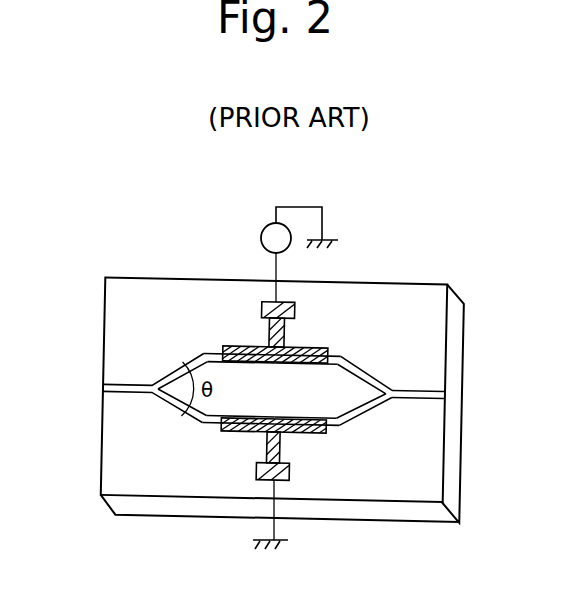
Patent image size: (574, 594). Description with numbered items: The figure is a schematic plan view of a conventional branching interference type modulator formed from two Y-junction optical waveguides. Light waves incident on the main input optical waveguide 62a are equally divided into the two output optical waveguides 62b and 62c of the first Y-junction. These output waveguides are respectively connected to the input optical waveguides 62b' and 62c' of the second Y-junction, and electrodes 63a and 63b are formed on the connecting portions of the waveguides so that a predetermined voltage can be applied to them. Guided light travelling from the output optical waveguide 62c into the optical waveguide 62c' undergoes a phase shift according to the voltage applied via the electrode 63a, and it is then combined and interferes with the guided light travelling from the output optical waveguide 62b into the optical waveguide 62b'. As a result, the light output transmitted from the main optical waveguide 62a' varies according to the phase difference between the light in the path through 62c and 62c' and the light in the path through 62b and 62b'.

The main input optical waveguide 62a is at (122, 413).
The main optical waveguide 62a' is at (429, 421).
The output optical waveguide 62b is at (208, 489).
The input optical waveguide 62b' is at (314, 491).
The output optical waveguide 62c is at (218, 284).
The input optical waveguide 62c' is at (368, 293).
The electrode 63a is at (322, 348).
The electrode 63b is at (225, 432).